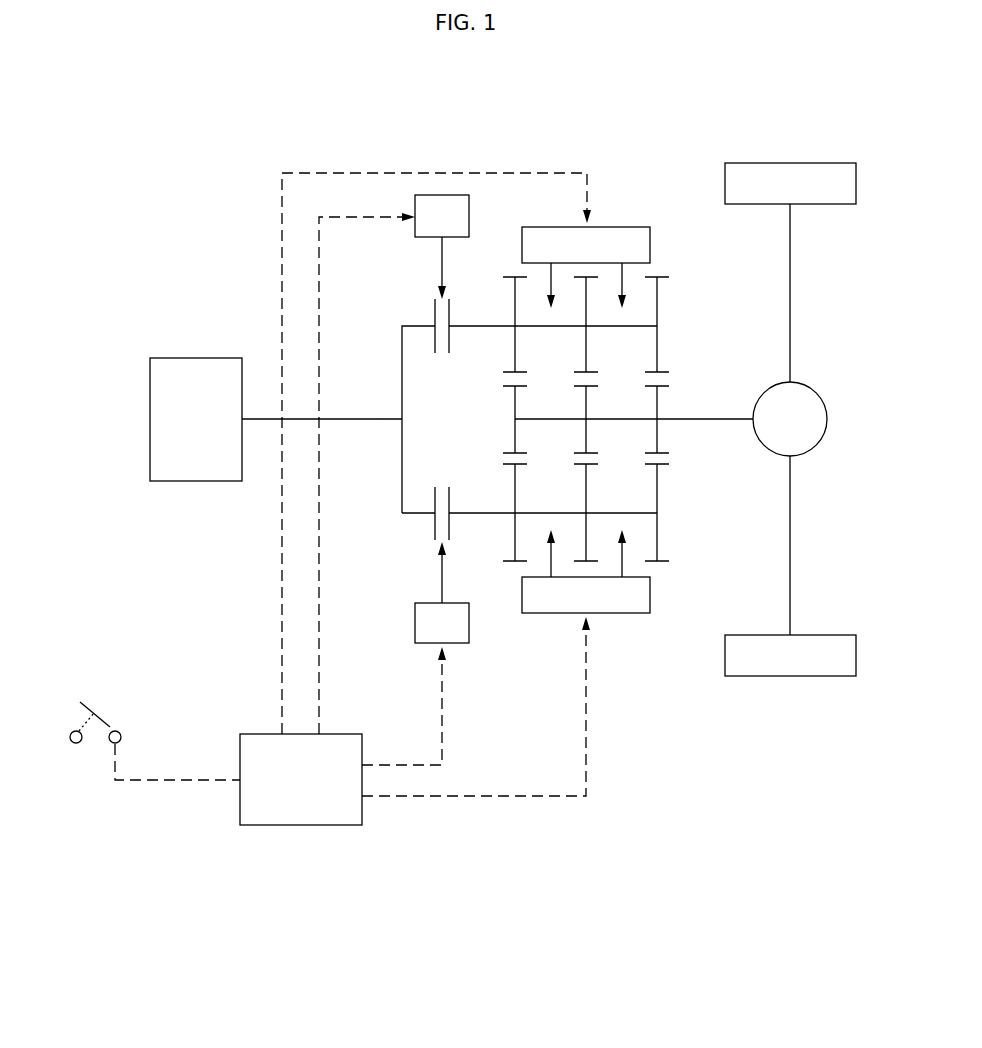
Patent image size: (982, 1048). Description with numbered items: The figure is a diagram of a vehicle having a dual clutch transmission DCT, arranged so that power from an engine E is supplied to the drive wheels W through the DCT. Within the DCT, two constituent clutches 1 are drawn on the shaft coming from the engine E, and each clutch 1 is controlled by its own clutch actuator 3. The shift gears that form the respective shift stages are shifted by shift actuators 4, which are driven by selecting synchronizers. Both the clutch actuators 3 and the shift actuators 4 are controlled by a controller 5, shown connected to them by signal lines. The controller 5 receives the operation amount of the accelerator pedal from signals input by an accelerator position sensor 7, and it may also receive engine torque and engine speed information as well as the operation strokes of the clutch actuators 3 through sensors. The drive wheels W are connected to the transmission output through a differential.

The clutch 1 is at (433, 304).
The clutch actuator 3 is at (469, 205).
The shift actuator 4 is at (630, 237).
The controller 5 is at (304, 815).
The APS (Accelerator Position Sensor) 7 is at (112, 726).
The engine E is at (190, 362).
The drive wheel W is at (790, 175).
The dual clutch transmission DCT is at (658, 150).